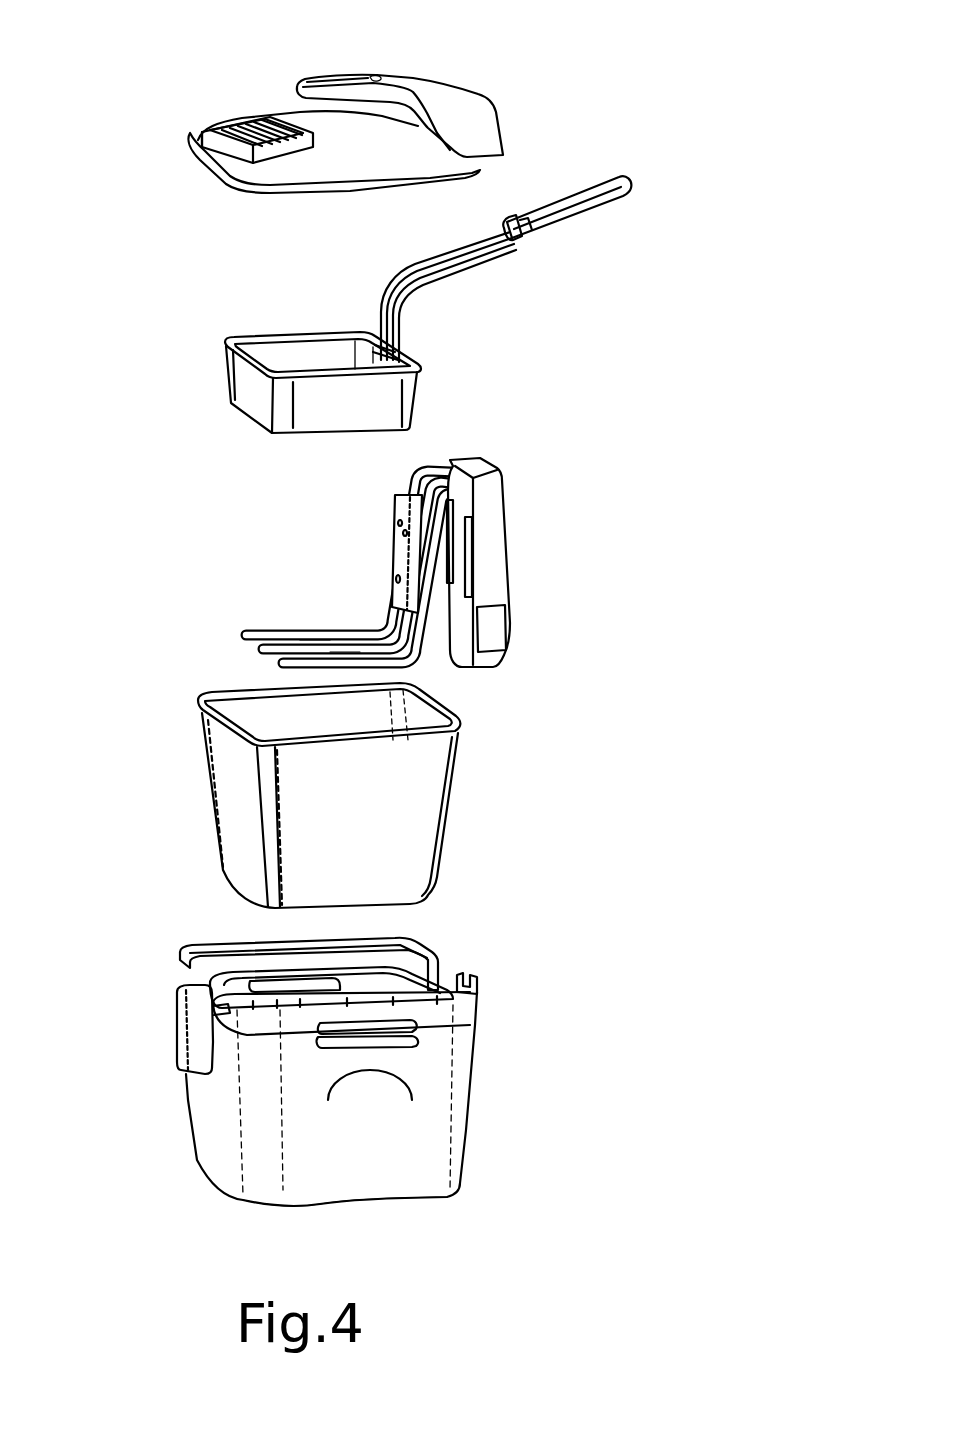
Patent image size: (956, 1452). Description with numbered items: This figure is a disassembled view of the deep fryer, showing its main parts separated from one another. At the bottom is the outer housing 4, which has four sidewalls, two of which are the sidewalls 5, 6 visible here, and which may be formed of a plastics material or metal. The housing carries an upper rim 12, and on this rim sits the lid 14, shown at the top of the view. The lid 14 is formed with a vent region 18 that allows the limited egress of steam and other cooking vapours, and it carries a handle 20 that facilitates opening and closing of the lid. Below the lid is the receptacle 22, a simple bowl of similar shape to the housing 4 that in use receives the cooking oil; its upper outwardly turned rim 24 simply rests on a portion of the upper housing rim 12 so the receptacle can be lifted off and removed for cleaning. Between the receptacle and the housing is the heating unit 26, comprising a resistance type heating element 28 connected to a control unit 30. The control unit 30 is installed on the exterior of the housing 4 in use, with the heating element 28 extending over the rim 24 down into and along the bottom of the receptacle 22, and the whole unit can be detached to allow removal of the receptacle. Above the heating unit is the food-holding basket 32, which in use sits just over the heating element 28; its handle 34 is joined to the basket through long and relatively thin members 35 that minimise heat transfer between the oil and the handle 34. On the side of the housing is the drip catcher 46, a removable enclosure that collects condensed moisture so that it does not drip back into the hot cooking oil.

The outer housing 4 is at (314, 1097).
The sidewall 5 is at (398, 1167).
The sidewall 6 is at (205, 1118).
The upper rim 12 is at (410, 940).
The lid 14 is at (362, 163).
The vent region 18 is at (246, 122).
The handle 20 is at (433, 90).
The receptacle 22 is at (364, 795).
The upper outwardly turned rim 24 is at (456, 722).
The heating unit 26 is at (444, 562).
The heating element 28 is at (368, 625).
The control unit 30 is at (500, 578).
The food-holding basket 32 is at (243, 398).
The handle 34 is at (567, 218).
The members 35 is at (432, 268).
The drip catcher 46 is at (175, 1000).